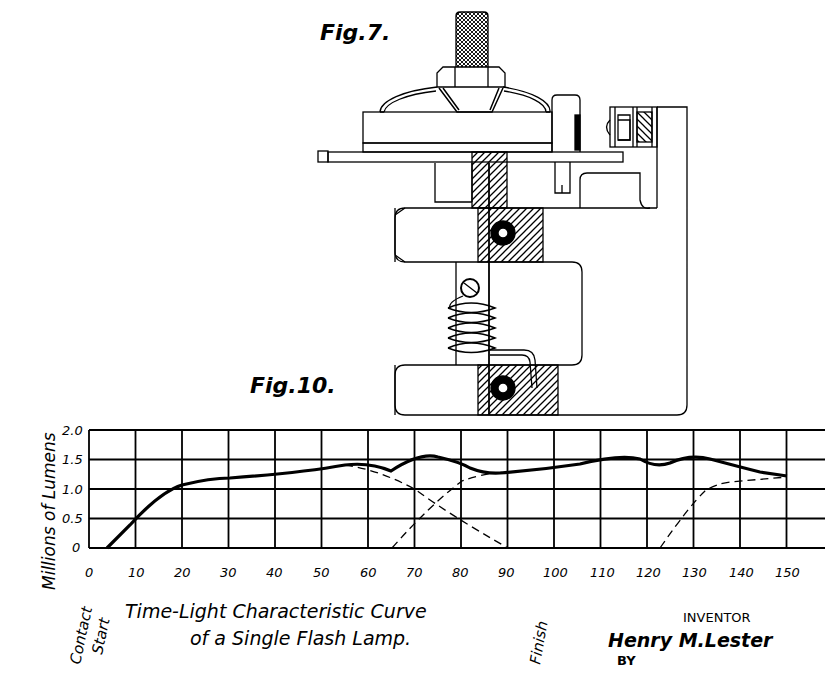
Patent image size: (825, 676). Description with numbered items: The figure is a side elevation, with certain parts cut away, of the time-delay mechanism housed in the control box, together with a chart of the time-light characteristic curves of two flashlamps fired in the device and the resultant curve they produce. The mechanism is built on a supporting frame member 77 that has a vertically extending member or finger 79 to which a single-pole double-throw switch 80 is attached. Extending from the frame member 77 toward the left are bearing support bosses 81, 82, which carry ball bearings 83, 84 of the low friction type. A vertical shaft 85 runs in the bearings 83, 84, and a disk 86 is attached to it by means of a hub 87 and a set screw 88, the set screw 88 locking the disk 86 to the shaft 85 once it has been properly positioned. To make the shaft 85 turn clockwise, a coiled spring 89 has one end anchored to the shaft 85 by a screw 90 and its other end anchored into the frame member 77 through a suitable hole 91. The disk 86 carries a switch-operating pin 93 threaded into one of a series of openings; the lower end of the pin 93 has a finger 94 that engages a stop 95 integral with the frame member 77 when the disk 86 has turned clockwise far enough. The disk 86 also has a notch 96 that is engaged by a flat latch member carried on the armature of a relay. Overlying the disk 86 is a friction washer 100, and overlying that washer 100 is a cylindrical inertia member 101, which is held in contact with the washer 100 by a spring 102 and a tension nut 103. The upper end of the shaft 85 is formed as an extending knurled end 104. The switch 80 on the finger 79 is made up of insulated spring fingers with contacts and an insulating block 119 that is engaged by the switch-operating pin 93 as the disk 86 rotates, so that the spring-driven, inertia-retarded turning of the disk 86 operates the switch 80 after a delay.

The supporting frame member 77 is at (670, 287).
The vertically extending member or finger 79 is at (680, 158).
The single-pole double-throw switch 80 is at (607, 94).
The bearing support boss 81 is at (405, 232).
The bearing support boss 82 is at (430, 370).
The ball bearing 83 is at (515, 258).
The ball bearing 84 is at (482, 388).
The vertical shaft 85 is at (487, 278).
The disk 86 is at (356, 163).
The hub 87 is at (438, 180).
The set screw 88 is at (507, 178).
The coiled spring 89 is at (452, 320).
The screw 90 is at (460, 291).
The hole 91 is at (558, 388).
The switch-operating pin 93 is at (567, 100).
The finger 94 is at (562, 200).
The stop 95 is at (612, 204).
The notch 96 is at (318, 156).
The friction washer 100 is at (415, 147).
The cylindrical inertia member 101 is at (368, 128).
The spring 102 is at (412, 98).
The tension nut 103 is at (497, 80).
The knurled end 104 is at (488, 38).
The insulating block 119 is at (622, 137).